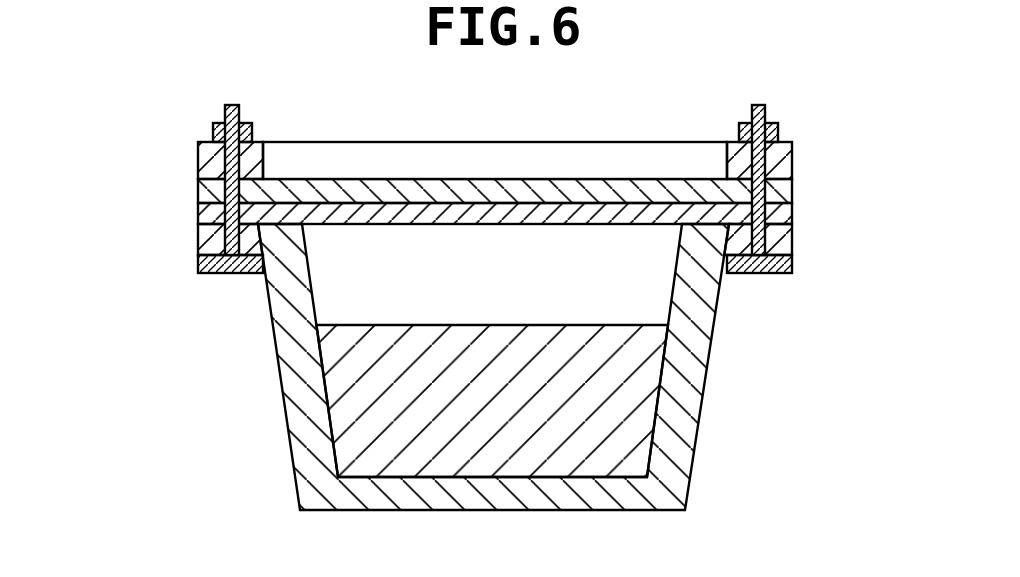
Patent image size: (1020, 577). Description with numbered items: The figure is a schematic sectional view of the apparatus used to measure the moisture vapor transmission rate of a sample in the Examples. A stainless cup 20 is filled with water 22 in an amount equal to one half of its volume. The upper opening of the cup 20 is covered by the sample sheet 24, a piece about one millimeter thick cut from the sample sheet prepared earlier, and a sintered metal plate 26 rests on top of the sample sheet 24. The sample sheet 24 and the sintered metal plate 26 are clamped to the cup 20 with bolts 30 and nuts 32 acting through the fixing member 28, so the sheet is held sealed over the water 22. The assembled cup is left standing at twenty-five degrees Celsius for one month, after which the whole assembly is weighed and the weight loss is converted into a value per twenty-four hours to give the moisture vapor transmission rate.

The cup 20 is at (693, 370).
The water 22 is at (620, 443).
The sample sheet 24 is at (198, 210).
The sintered metal plate 26 is at (198, 188).
The fixing member 28 is at (198, 158).
The bolt 30 is at (198, 263).
The nut 32 is at (213, 127).